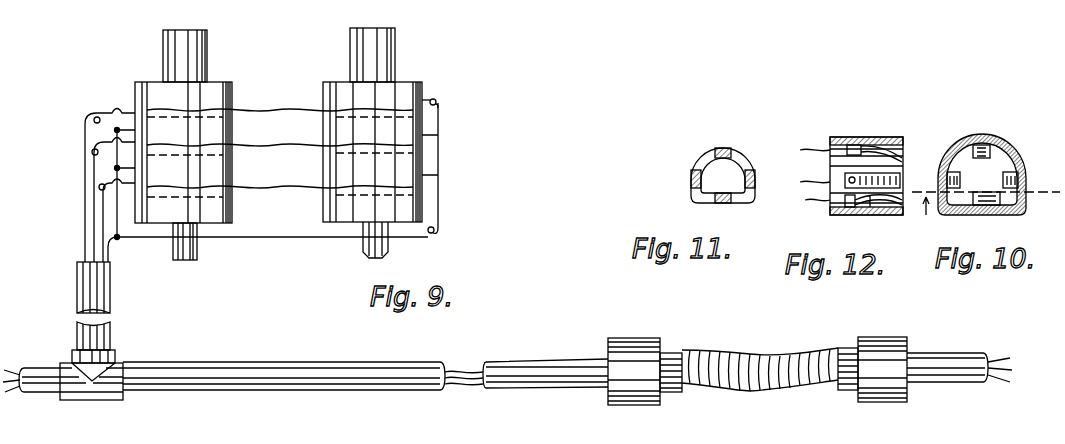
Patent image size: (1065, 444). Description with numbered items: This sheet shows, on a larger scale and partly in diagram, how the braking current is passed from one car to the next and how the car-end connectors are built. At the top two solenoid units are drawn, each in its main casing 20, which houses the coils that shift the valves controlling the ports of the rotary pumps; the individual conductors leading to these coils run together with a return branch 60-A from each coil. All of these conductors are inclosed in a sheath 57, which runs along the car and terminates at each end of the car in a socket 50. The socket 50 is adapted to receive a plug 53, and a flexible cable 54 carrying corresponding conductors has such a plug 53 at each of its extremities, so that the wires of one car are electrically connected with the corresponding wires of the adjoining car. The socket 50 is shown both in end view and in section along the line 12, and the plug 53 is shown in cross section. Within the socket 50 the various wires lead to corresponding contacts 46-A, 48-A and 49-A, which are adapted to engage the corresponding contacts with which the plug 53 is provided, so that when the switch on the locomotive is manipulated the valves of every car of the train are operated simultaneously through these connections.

In FIG. 9, the main casing 20 is at (274, 144).
In FIG. 9, the sheath 57 is at (511, 360).
In FIG. 9, the socket 50 is at (634, 340).
In FIG. 12, the socket 50 is at (851, 144).
In FIG. 10, the socket 50 is at (982, 146).
In FIG. 9, the plug 53 is at (665, 345).
In FIG. 11, the plug 53 is at (700, 146).
In FIG. 9, the flexible cable 54 is at (765, 356).
In FIG. 12, the contact 48-A is at (858, 136).
In FIG. 10, the contact 48-A is at (1005, 172).
In FIG. 12, the contact 46-A is at (888, 172).
In FIG. 10, the contact 46-A is at (985, 143).
In FIG. 12, the return branch 60-A is at (868, 216).
In FIG. 10, the return branch 60-A is at (928, 136).
In FIG. 10, the contact 49-A is at (990, 214).
In FIG. 10, the section line 12 is at (988, 195).